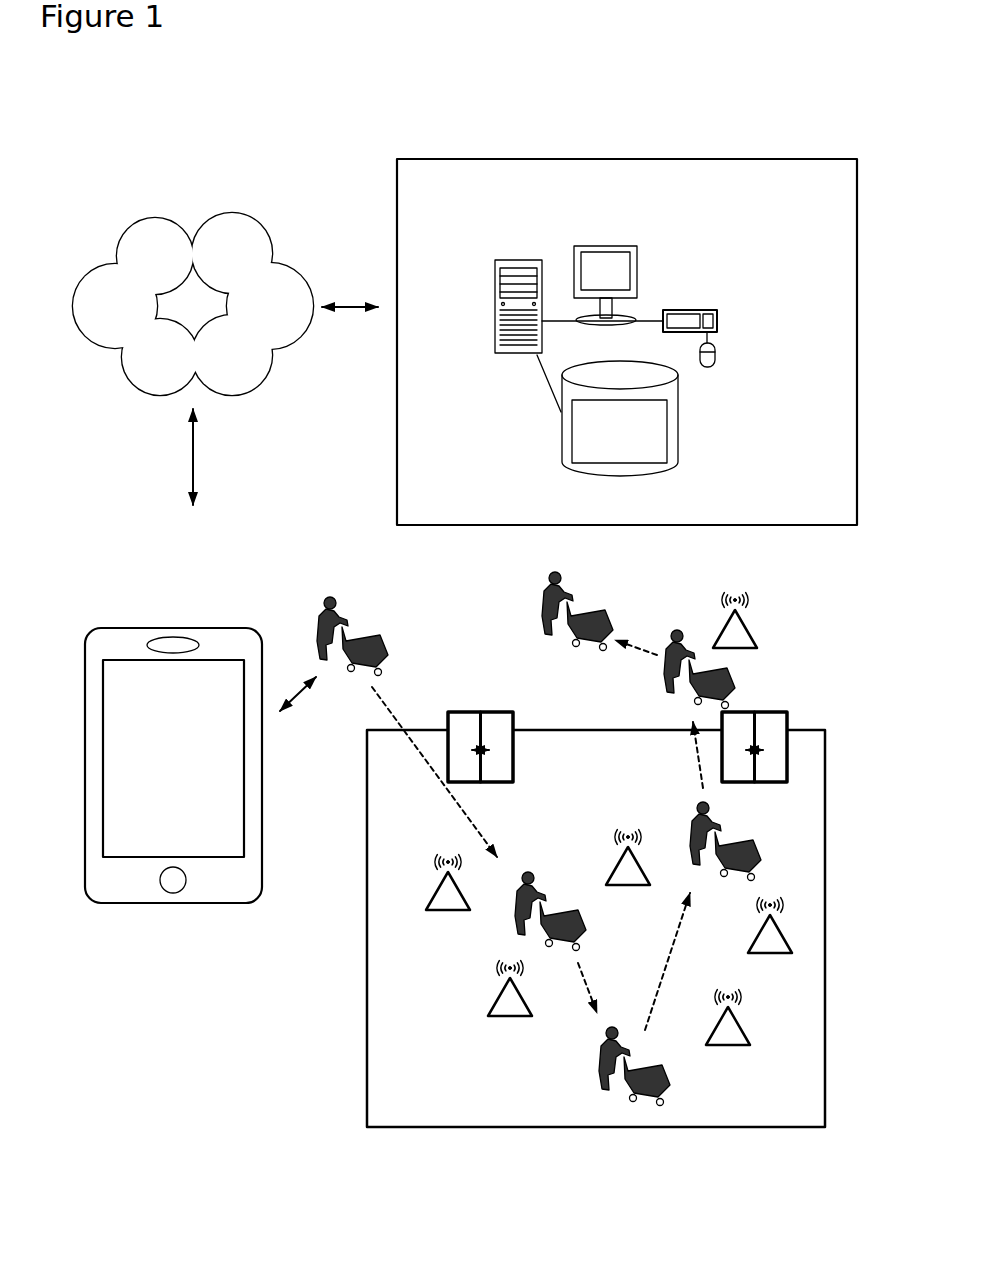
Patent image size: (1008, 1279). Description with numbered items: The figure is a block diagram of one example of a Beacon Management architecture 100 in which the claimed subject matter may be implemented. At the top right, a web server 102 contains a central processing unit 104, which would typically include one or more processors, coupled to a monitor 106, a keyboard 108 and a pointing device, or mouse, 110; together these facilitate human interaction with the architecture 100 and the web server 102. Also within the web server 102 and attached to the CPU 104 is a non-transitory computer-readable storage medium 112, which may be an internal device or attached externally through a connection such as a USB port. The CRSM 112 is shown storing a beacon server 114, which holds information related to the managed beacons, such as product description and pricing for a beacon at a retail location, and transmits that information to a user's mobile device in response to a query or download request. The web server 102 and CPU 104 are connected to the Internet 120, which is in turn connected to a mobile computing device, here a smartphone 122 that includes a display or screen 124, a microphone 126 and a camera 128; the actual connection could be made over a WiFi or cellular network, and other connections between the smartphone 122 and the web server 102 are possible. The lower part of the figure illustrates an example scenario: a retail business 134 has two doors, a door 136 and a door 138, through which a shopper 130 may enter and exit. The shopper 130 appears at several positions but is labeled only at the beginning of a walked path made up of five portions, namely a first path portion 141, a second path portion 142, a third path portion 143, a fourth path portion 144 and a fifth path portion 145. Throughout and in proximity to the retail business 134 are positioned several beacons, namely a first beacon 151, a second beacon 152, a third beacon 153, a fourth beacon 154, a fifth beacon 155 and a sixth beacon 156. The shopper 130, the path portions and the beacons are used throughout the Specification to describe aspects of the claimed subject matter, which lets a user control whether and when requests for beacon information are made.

The Beacon Management architecture 100 is at (347, 148).
The web server 102 is at (627, 342).
The central processing unit 104 is at (518, 260).
The monitor 106 is at (640, 259).
The keyboard 108 is at (690, 310).
The mouse 110 is at (707, 367).
The computer-readable storage medium 112 is at (579, 432).
The beacon server 114 is at (619, 431).
The Internet 120 is at (193, 304).
The smartphone 122 is at (176, 760).
The screen 124 is at (173, 758).
The microphone 126 is at (155, 905).
The camera 128 is at (207, 647).
The shopper 130 is at (360, 625).
The retail business 134 is at (367, 982).
The door 136 is at (493, 712).
The door 138 is at (775, 712).
The P_1 141 is at (412, 742).
The P_2 142 is at (580, 980).
The P_3 143 is at (655, 998).
The P_4 144 is at (697, 748).
The P_5 145 is at (648, 648).
The B_1 151 is at (448, 912).
The B_2 152 is at (505, 1022).
The B_3 153 is at (725, 1047).
The B_4 154 is at (757, 955).
The B_5 155 is at (612, 870).
The B_6 156 is at (757, 640).